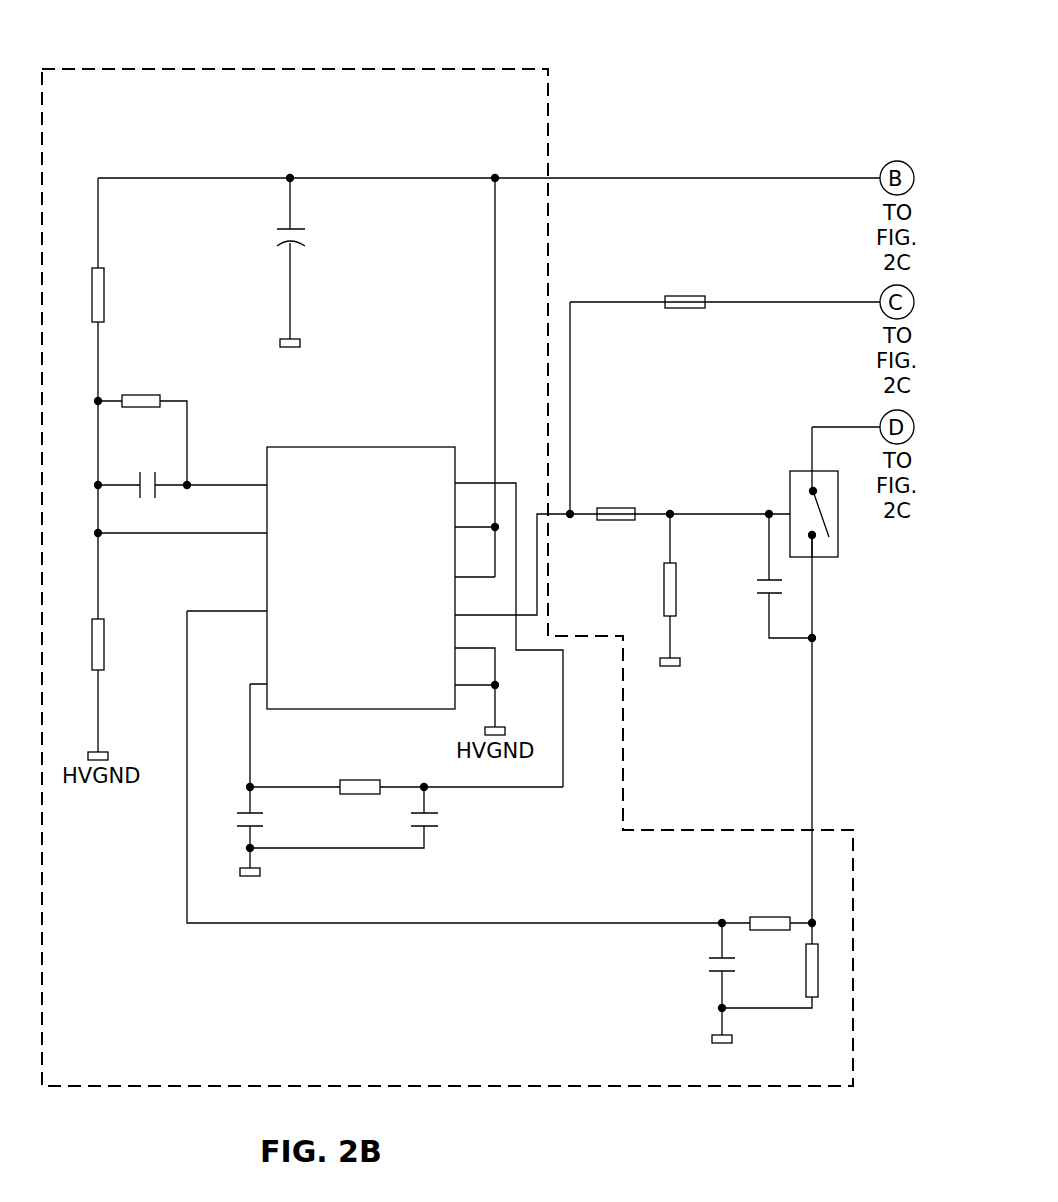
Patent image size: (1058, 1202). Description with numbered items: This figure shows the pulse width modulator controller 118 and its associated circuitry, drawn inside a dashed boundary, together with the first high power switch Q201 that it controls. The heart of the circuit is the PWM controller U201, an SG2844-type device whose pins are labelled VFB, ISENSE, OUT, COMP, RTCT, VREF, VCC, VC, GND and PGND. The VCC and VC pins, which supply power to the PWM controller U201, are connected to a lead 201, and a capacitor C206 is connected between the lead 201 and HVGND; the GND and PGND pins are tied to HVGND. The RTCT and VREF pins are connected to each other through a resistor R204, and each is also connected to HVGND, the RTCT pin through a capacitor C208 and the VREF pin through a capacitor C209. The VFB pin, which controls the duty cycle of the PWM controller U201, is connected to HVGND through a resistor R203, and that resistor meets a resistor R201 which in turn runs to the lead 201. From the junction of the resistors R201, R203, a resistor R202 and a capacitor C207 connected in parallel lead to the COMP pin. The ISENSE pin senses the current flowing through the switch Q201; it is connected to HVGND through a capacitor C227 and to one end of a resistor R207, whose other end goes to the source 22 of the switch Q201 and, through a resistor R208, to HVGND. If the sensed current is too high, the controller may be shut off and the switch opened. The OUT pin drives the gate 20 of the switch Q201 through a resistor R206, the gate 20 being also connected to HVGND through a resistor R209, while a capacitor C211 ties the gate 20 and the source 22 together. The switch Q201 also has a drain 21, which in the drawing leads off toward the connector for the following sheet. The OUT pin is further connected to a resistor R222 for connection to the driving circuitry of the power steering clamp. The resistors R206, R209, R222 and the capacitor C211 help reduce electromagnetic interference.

The pulse width modulator (PWM) controller 118 is at (388, 68).
The lead 201 is at (697, 178).
The resistor R201 is at (104, 297).
The resistor R202 is at (141, 395).
The resistor R203 is at (104, 646).
The resistor R204 is at (360, 780).
The resistor R206 is at (616, 508).
The resistor R207 is at (765, 917).
The resistor R208 is at (806, 969).
The resistor R209 is at (676, 588).
The resistor R222 is at (685, 296).
The capacitor C206 is at (319, 233).
The capacitor C207 is at (143, 470).
The capacitor C208 is at (232, 815).
The capacitor C209 is at (446, 829).
The capacitor C211 is at (758, 603).
The capacitor C227 is at (695, 978).
The pulse width modulator (PWM) controller U201 is at (353, 447).
The first high power switch Q201 is at (837, 685).
The gate 20 is at (790, 512).
The drain 21 is at (813, 471).
The source 22 is at (814, 559).